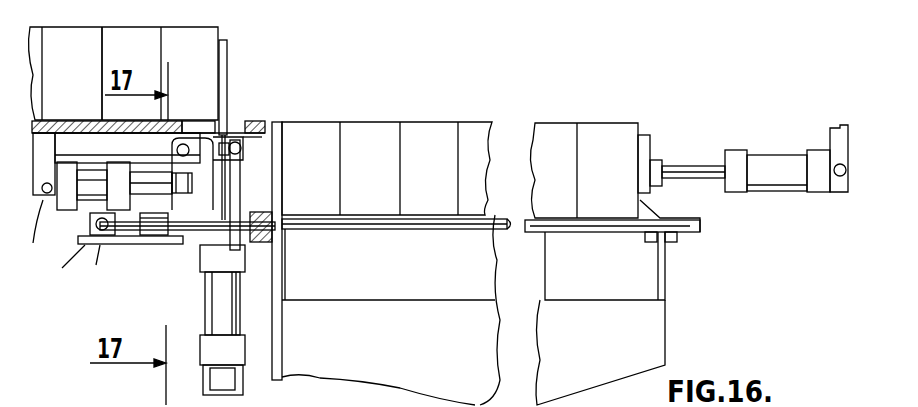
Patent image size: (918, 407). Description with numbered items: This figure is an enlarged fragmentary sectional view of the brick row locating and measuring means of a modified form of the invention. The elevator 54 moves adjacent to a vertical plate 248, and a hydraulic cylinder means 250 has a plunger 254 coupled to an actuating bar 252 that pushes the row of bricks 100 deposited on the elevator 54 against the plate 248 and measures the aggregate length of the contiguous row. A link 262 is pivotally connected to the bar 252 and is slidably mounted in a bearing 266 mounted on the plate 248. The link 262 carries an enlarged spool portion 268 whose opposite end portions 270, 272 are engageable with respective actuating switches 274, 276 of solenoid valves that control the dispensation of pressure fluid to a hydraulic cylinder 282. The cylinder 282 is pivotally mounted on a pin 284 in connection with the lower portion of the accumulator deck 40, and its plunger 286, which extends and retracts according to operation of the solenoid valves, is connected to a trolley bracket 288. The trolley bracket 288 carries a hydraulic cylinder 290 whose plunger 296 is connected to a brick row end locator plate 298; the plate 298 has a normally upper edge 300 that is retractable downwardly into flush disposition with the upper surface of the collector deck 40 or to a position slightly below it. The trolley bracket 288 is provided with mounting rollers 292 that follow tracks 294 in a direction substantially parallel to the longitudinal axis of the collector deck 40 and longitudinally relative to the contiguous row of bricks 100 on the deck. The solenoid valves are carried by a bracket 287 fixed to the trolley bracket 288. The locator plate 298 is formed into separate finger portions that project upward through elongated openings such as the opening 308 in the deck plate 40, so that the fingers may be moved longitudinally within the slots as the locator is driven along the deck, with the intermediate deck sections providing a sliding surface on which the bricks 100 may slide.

The bricks 100 is at (118, 27).
The upper edge 300 is at (223, 40).
The brick row end locator plate 298 is at (228, 68).
The accumulator deck 40 is at (92, 120).
The opening 308 is at (190, 91).
The pin 284 is at (38, 240).
The tracks 294 is at (158, 165).
The hydraulic cylinder 282 is at (90, 165).
The plunger 286 is at (161, 192).
The mounting rollers 292 is at (243, 136).
The trolley bracket 288 is at (262, 162).
The actuating switch 276 is at (170, 222).
The actuating switch 274 is at (90, 226).
The end portion 272 is at (160, 245).
The spool portion 268 is at (130, 244).
The end portion 270 is at (58, 267).
The bracket 287 is at (94, 266).
The bearing 266 is at (283, 245).
The hydraulic cylinder 290 is at (208, 306).
The plunger 296 is at (250, 203).
The vertical plate 248 is at (283, 345).
The elevator 54 is at (455, 300).
The actuating bar 252 is at (650, 157).
The plunger 254 is at (700, 165).
The hydraulic cylinder means 250 is at (795, 192).
The link 262 is at (598, 234).